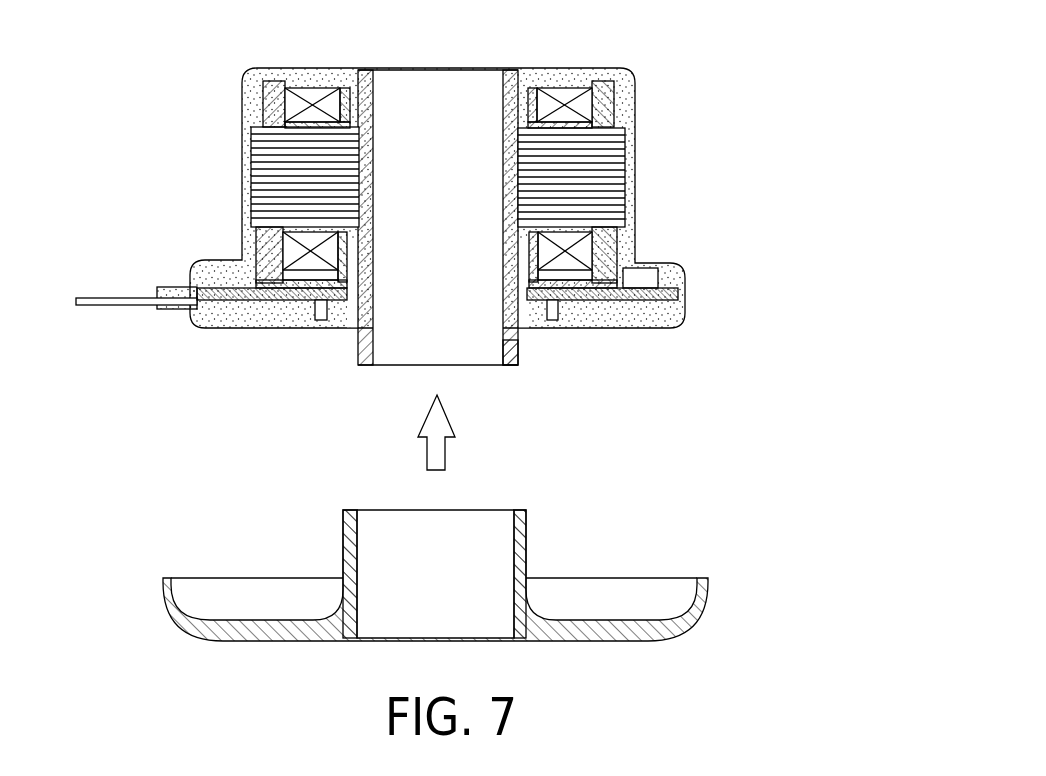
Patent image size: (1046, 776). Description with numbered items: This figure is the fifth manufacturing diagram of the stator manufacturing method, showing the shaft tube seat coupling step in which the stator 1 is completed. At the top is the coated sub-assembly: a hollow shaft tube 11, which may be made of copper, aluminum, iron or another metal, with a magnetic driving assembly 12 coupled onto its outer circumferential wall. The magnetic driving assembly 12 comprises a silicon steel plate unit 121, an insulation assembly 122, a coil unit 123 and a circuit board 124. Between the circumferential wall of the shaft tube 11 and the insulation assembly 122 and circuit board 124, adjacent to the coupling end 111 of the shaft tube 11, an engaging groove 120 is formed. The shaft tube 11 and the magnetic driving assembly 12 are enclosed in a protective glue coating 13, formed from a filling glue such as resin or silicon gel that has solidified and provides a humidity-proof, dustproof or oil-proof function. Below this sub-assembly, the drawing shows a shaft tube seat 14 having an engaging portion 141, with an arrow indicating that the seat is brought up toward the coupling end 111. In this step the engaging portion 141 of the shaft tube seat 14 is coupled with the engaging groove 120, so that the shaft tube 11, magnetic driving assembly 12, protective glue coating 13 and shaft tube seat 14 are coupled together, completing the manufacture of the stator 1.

The stator 1 is at (192, 180).
The shaft tube 11 is at (407, 357).
The coupling end 111 is at (512, 363).
The magnetic driving assembly 12 is at (808, 28).
The engaging groove 120 is at (527, 283).
The silicon steel plate unit 121 is at (617, 147).
The insulation assembly 122 is at (605, 250).
The coil unit 123 is at (548, 88).
The circuit board 124 is at (635, 290).
The protective glue coating 13 is at (255, 110).
The shaft tube seat 14 is at (663, 640).
The engaging portion 141 is at (527, 512).